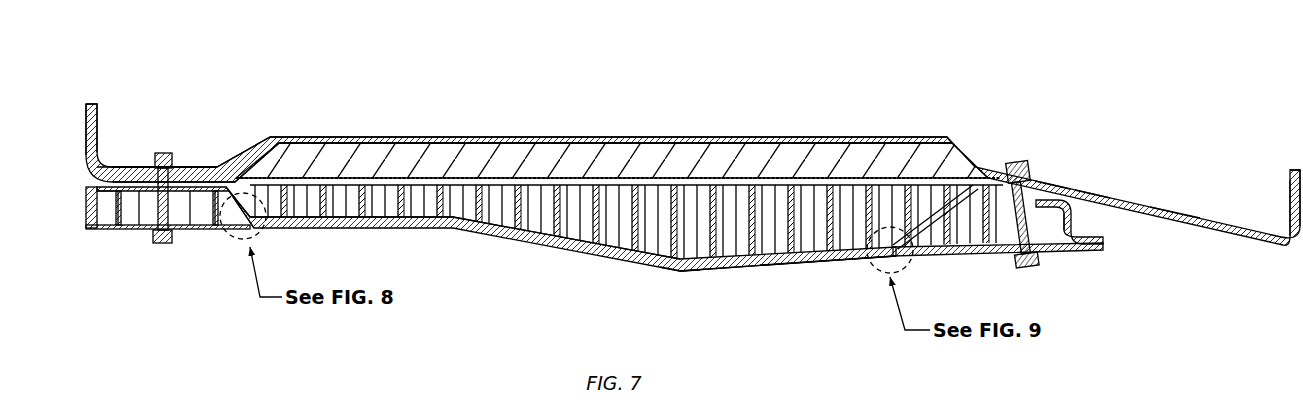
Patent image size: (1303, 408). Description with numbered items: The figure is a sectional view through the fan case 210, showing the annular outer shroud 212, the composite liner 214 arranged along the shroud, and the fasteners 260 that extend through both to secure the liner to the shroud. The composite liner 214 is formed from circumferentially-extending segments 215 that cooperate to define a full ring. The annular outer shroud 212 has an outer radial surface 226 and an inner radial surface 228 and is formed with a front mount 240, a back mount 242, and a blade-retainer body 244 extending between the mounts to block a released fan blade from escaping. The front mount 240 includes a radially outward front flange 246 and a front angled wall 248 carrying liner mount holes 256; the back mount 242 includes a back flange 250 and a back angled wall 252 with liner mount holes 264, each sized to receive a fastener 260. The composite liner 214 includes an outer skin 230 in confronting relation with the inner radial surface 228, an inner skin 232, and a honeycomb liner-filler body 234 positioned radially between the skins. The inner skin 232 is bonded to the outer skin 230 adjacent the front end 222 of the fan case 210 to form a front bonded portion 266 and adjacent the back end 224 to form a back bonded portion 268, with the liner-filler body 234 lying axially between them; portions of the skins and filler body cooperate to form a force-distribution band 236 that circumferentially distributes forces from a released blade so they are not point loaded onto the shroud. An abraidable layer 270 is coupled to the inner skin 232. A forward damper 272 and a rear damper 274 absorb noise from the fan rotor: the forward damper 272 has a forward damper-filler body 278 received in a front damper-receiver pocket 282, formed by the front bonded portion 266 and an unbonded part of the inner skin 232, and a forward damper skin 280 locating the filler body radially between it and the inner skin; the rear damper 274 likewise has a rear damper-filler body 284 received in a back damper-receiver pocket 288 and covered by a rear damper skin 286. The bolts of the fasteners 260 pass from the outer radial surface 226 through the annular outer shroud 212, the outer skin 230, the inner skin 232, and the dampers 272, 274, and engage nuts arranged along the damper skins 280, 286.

The fan case 210 is at (972, 90).
The annular outer shroud 212 is at (618, 114).
The composite liner 214 is at (616, 270).
The circumferentially-extending segment 215 is at (805, 276).
The front end 222 is at (92, 98).
The back end 224 is at (1293, 150).
The outer radial surface 226 is at (548, 137).
The inner radial surface 228 is at (645, 183).
The outer skin 230 is at (412, 182).
The inner skin 232 is at (566, 245).
The liner-filler body 234 is at (490, 205).
The force-distribution band 236 is at (740, 280).
The front mount 240 is at (150, 82).
The back mount 242 is at (1205, 178).
The blade-retainer body 244 is at (792, 152).
The front flange 246 is at (100, 128).
The front angled wall 248 is at (210, 168).
The back flange 250 is at (1290, 208).
The back angled wall 252 is at (1176, 220).
The liner mount hole 256 is at (176, 170).
The fastener 260 is at (166, 152).
The liner mount hole 264 is at (1048, 186).
The front bonded portion 266 is at (148, 172).
The back bonded portion 268 is at (1090, 214).
The abraidable layer 270 is at (682, 270).
The forward damper 272 is at (132, 237).
The rear damper 274 is at (1040, 270).
The forward damper-filler body 278 is at (224, 210).
The forward damper skin 280 is at (178, 232).
The front damper-receiver pocket 282 is at (110, 235).
The rear damper-filler body 284 is at (960, 225).
The rear damper skin 286 is at (968, 250).
The back damper-receiver pocket 288 is at (1054, 235).